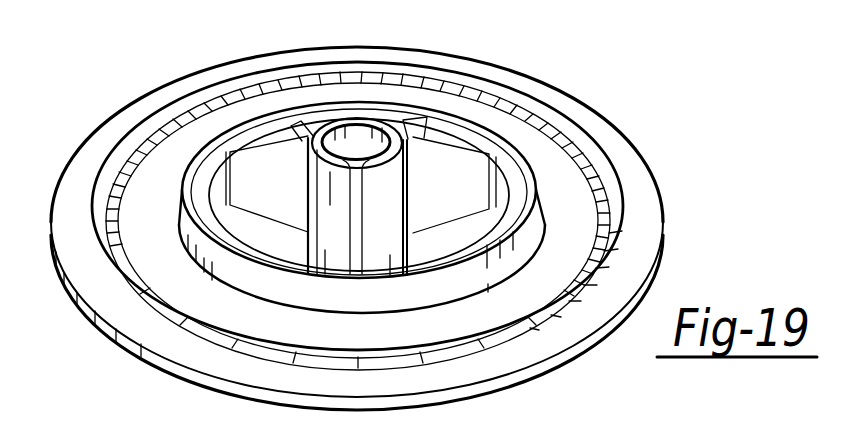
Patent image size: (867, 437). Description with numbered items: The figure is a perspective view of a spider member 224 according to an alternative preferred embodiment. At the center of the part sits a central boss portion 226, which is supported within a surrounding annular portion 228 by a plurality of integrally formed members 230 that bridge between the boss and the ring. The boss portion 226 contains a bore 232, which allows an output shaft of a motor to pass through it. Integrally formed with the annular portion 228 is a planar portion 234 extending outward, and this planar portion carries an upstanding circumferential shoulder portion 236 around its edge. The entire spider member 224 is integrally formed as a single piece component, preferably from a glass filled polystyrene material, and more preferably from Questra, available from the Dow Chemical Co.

The spider member 224 is at (640, 89).
The central boss portion 226 is at (395, 185).
The annular portion 228 is at (184, 238).
The integrally formed members 230 is at (290, 198).
The bore 232 is at (356, 133).
The planar portion 234 is at (97, 311).
The upstanding circumferential shoulder portion 236 is at (108, 165).